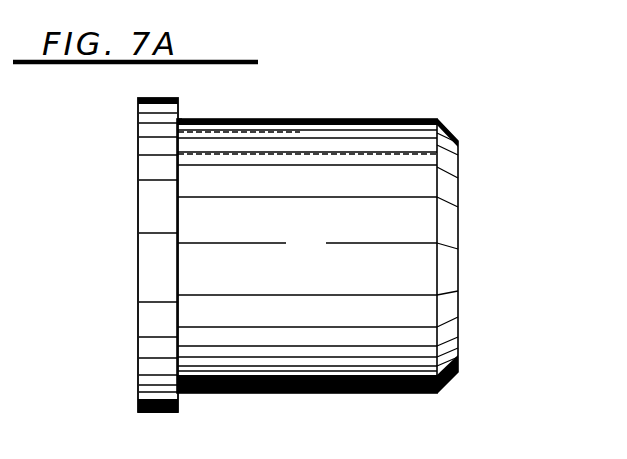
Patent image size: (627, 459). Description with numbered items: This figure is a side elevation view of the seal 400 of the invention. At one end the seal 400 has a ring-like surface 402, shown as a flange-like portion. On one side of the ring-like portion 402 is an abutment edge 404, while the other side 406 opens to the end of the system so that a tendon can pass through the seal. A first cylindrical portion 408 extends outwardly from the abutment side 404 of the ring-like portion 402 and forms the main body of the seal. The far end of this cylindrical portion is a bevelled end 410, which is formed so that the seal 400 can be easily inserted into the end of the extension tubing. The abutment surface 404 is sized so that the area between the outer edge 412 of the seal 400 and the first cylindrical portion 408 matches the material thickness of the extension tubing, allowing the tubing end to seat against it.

The seal 400 is at (468, 170).
The ring-like surface 402 is at (155, 125).
The abutment edge 404 is at (179, 114).
The other side 406 is at (137, 178).
The first cylindrical portion 408 is at (325, 265).
The bevelled end 410 is at (447, 217).
The outer edge 412 is at (163, 412).